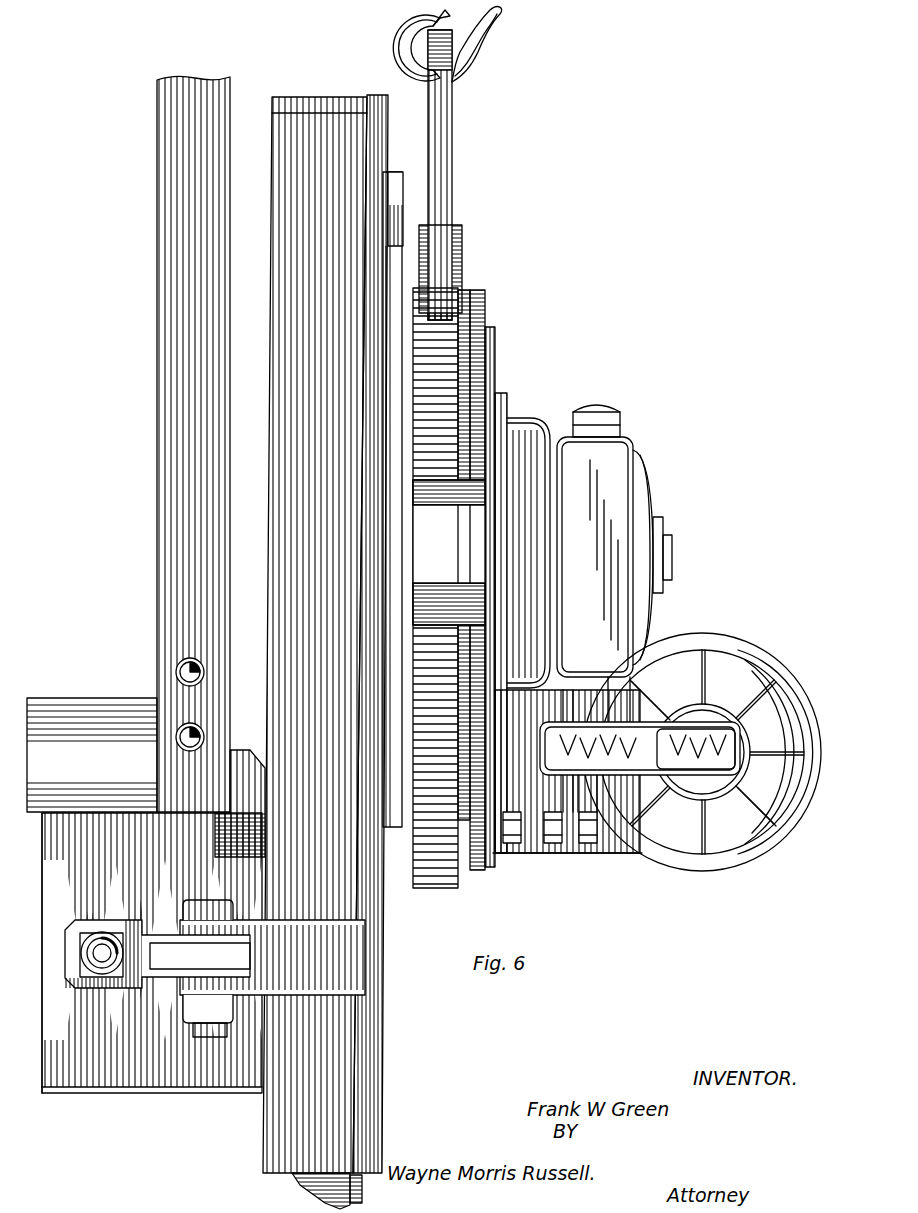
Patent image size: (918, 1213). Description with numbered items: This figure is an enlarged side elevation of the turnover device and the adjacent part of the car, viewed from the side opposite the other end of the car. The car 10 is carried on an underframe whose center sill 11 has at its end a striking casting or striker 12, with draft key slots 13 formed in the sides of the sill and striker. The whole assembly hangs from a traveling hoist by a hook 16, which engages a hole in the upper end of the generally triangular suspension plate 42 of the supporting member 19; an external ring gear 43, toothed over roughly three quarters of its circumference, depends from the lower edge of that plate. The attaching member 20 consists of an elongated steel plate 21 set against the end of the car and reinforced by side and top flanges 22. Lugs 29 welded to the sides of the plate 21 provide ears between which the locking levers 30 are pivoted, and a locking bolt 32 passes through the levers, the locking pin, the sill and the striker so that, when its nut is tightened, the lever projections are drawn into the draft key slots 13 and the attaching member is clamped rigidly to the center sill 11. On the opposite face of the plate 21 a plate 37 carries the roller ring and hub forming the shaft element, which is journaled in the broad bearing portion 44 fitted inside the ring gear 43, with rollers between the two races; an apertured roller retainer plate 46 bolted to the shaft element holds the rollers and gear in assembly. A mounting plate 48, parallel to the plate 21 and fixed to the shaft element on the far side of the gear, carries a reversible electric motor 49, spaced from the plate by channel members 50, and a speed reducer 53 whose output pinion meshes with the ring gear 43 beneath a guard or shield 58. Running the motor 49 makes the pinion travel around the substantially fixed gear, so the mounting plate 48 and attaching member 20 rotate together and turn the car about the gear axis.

The railway car body 10 is at (157, 497).
The center sill 11 is at (150, 1073).
The striking casting 12 is at (237, 752).
The draft key slots 13 is at (42, 940).
The hook 16 is at (488, 47).
The supporting member 19 is at (466, 238).
The attaching member 20 is at (394, 127).
The elongated steel plate 21 is at (385, 916).
The side and top flanges 22 is at (273, 135).
The lugs 29 is at (340, 968).
The locking levers 30 is at (160, 943).
The locking bolt 32 is at (102, 950).
The plate 37 is at (407, 187).
The suspension plate 42 is at (445, 127).
The ring gear 43 is at (442, 890).
The bearing portion 44 is at (465, 290).
The roller retainer plate 46 is at (490, 298).
The mounting plate 48 is at (498, 335).
The reversible electric motor 49 is at (735, 636).
The channel members 50 is at (535, 853).
The speed reducer 53 is at (632, 440).
The guard or shield 58 is at (458, 556).